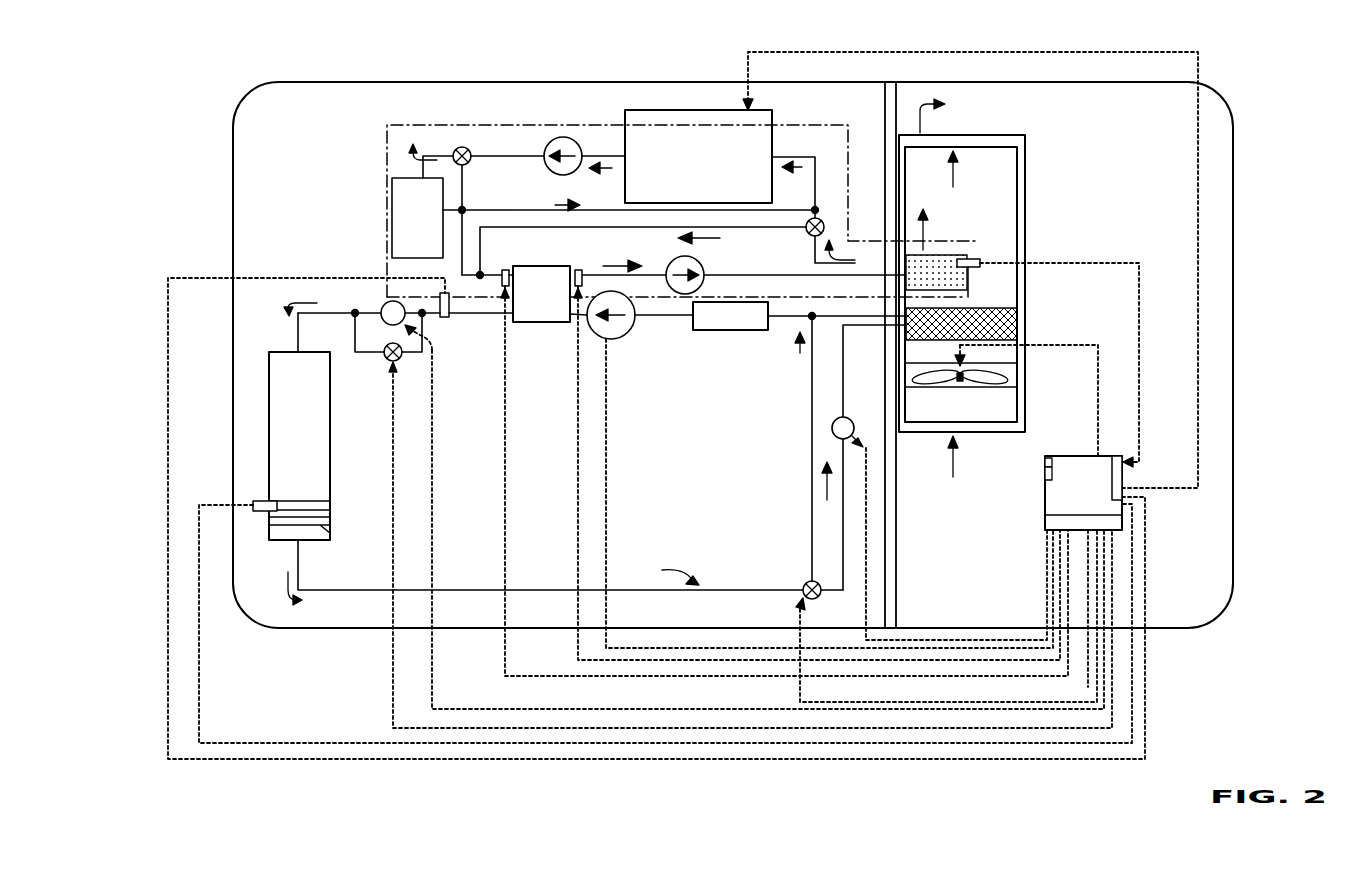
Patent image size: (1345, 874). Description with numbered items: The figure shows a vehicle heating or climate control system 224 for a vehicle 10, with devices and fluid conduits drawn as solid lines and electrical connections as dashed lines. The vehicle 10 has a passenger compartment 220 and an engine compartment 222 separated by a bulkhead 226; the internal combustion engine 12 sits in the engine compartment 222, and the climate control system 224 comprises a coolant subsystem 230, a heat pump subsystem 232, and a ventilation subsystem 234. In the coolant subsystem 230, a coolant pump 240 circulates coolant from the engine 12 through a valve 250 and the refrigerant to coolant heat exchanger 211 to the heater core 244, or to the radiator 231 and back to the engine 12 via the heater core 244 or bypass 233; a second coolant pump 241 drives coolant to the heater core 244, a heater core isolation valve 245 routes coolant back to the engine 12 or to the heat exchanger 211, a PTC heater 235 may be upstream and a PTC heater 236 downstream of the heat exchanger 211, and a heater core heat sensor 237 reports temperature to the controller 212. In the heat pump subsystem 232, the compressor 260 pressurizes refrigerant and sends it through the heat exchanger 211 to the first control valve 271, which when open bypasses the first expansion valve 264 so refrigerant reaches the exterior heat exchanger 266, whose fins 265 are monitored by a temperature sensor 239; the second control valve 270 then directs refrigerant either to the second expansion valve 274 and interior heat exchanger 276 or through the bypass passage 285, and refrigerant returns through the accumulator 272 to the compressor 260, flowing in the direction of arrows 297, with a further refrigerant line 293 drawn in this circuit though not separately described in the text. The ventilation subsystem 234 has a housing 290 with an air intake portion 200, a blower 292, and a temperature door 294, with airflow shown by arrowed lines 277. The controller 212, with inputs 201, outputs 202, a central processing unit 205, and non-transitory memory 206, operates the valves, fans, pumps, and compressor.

The vehicle 10 is at (242, 100).
The internal combustion engine 12 is at (710, 167).
The air intake portion 200 is at (974, 415).
The inputs 201 is at (1118, 457).
The outputs 202 is at (1052, 527).
The central processing unit 205 is at (1044, 475).
The non-transitory memory 206 is at (1044, 463).
The refrigerant to coolant heat exchanger 211 is at (558, 304).
The controller 212 is at (683, 405).
The passenger compartment 220 is at (1176, 197).
The engine compartment 222 is at (313, 157).
The climate control system 224 is at (411, 98).
The bulkhead 226 is at (900, 450).
The coolant subsystem 230 is at (387, 143).
The radiator 231 is at (422, 201).
The heat pump subsystem 232 is at (340, 290).
The bypass 233 is at (497, 211).
The ventilation subsystem 234 is at (1033, 149).
The PTC heater 235 is at (508, 268).
The PTC heater 236 is at (579, 268).
The heater core heat sensor 237 is at (982, 262).
The temperature sensor 239 is at (253, 503).
The coolant pump 240 is at (571, 173).
The second coolant pump 241 is at (668, 266).
The heater core 244 is at (958, 256).
The heater core isolation valve 245 is at (808, 233).
The valve 250 is at (467, 165).
The compressor 260 is at (622, 335).
The first expansion valve 264 is at (395, 323).
The exterior heat exchanger fins 265 is at (328, 531).
The exterior heat exchanger 266 is at (316, 453).
The second control valve 270 is at (806, 583).
The first control valve 271 is at (398, 370).
The accumulator 272 is at (747, 326).
The second expansion valve 274 is at (880, 405).
The interior heat exchanger 276 is at (1018, 322).
The arrowed lines 277 is at (925, 122).
The bypass passage 285 is at (812, 442).
The housing 290 is at (1026, 415).
The blower 292 is at (1010, 378).
The supply line 293 is at (799, 358).
The temperature door 294 is at (977, 285).
The arrows 297 is at (826, 490).